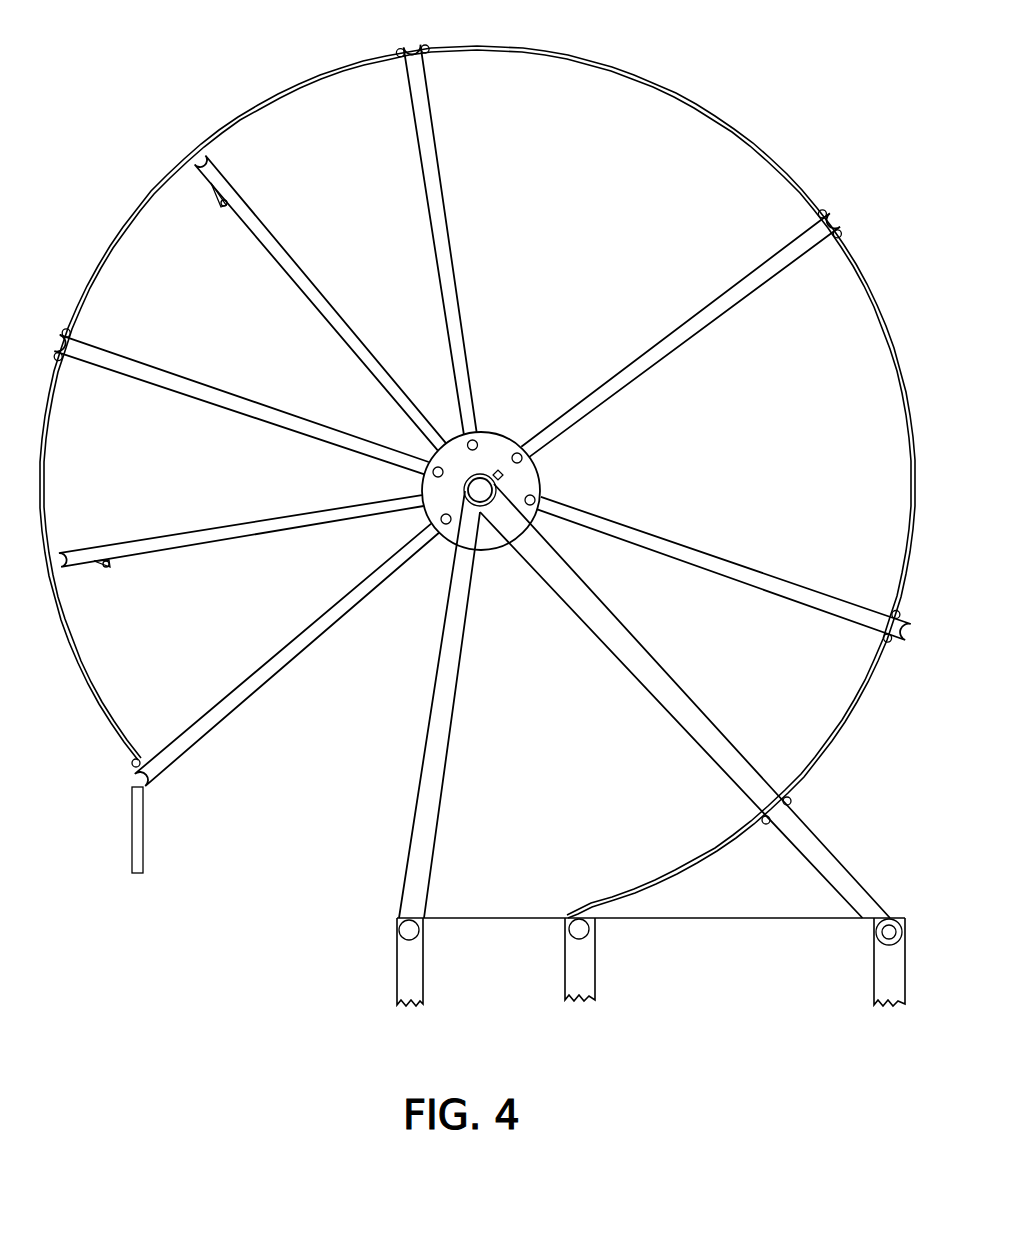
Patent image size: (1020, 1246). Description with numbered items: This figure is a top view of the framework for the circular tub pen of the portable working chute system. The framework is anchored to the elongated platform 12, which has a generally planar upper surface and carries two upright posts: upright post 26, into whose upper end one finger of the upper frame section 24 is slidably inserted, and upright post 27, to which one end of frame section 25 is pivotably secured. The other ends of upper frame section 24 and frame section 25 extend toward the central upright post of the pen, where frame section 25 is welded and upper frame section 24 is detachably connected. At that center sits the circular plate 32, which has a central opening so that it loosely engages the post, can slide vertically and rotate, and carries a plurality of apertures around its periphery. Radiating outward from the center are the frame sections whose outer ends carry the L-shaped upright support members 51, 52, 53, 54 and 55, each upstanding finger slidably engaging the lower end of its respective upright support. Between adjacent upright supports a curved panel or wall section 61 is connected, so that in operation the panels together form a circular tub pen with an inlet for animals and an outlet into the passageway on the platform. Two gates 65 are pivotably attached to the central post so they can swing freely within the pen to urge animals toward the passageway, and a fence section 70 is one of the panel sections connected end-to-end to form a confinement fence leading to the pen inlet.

The curved panel 61 is at (592, 62).
The circular plate 32 is at (497, 446).
The L-shaped upright support member 53 is at (447, 221).
The L-shaped upright support member 52 is at (742, 304).
The L-shaped upright support member 51 is at (782, 580).
The L-shaped upright support member 54 is at (228, 395).
The L-shaped upright support member 55 is at (225, 714).
The gate 65 is at (311, 290).
The frame section 25 is at (438, 770).
The upper frame section 24 is at (667, 704).
The elongated platform 12 is at (750, 917).
The upright post 27 is at (404, 930).
The upright post 26 is at (889, 918).
The fence section 70 is at (142, 845).